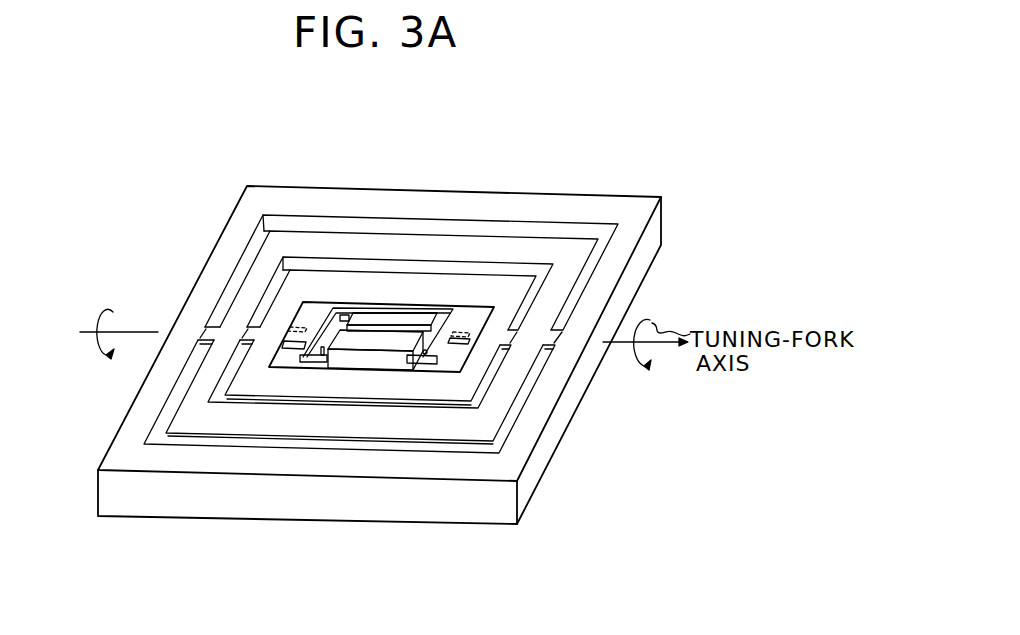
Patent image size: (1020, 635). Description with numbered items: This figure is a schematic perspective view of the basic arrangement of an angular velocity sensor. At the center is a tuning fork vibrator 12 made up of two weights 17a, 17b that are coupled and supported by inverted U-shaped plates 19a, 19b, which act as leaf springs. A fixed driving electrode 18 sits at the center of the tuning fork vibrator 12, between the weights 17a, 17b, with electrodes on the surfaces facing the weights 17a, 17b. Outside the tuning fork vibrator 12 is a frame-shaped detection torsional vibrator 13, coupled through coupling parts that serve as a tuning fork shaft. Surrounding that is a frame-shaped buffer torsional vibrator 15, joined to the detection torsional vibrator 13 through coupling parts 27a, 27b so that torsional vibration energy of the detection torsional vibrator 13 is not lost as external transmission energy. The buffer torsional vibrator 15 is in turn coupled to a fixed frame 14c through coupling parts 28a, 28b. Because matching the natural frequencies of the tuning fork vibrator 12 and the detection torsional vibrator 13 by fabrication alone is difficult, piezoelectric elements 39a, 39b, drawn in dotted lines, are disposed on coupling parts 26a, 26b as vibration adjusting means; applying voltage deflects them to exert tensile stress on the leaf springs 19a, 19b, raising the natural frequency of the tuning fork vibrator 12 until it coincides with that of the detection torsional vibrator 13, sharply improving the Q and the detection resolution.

The tuning fork vibrator 12 is at (400, 303).
The detection torsional vibrator 13 is at (447, 282).
The fixed frame 14c is at (632, 208).
The buffer torsional vibrator 15 is at (533, 247).
The weight 17a is at (372, 313).
The weight 17b is at (425, 313).
The fixed driving electrode 18 is at (345, 332).
The inverted U-shaped plate 19a is at (343, 332).
The inverted U-shaped plate 19b is at (453, 332).
The coupling part 26a is at (294, 343).
The coupling part 26b is at (458, 345).
The coupling part 27a is at (250, 343).
The coupling part 27b is at (512, 340).
The coupling part 28a is at (207, 334).
The coupling part 28b is at (553, 340).
The piezoelectric element 39a is at (290, 328).
The piezoelectric element 39b is at (457, 363).